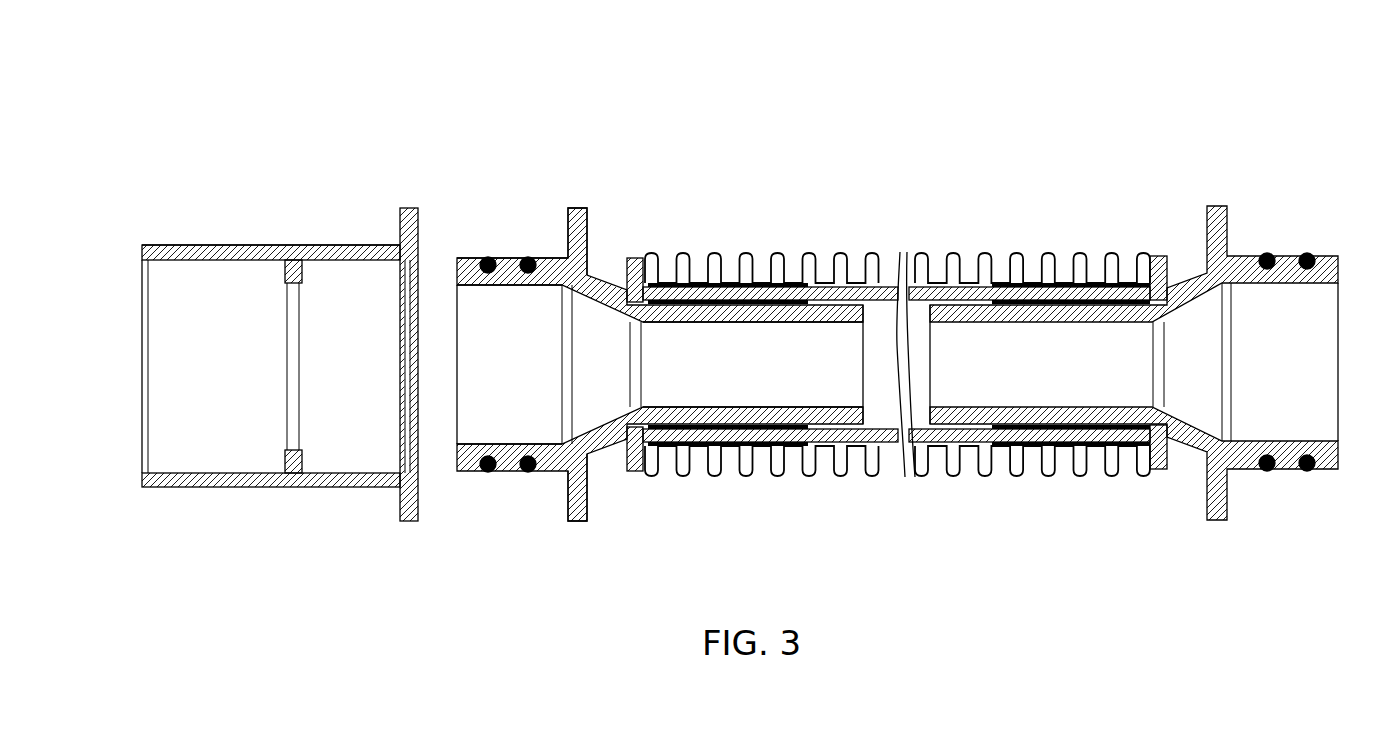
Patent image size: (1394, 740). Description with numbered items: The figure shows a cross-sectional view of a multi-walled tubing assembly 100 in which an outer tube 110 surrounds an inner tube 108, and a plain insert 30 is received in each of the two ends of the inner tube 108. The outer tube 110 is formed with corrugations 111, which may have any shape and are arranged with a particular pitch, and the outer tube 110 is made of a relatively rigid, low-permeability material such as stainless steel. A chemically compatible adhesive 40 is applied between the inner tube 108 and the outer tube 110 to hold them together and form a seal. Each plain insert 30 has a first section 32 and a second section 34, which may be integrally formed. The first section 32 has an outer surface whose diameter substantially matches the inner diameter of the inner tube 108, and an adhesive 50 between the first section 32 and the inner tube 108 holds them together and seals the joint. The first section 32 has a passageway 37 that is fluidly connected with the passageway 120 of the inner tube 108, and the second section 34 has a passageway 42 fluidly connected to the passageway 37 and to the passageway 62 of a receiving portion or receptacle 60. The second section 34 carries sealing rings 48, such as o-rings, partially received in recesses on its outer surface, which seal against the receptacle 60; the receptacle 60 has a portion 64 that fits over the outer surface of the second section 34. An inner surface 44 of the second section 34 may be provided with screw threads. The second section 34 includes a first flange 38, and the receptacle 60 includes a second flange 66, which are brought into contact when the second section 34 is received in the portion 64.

The multi-walled tubing assembly 100 is at (938, 123).
The plain insert 30 is at (458, 257).
The first section 32 is at (868, 425).
The second section 34 is at (543, 260).
The passageway 37 is at (780, 375).
The first flange 38 is at (587, 208).
The adhesive 40 is at (670, 283).
The passageway 42 is at (508, 327).
The inner surface 44 is at (503, 447).
The sealing rings 48 is at (528, 473).
The adhesive 50 is at (730, 283).
The receiving portion or receptacle 60 is at (142, 245).
The passageway 62 is at (198, 420).
The portion 64 is at (367, 243).
The second flange 66 is at (417, 208).
The inner tube 108 is at (807, 290).
The outer tube 110 is at (854, 300).
The corrugations 111 is at (712, 477).
The passageway 120 is at (883, 382).